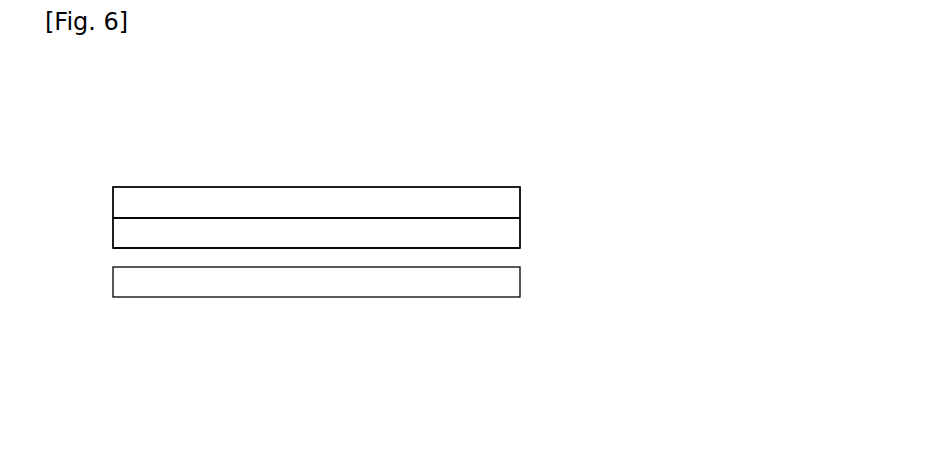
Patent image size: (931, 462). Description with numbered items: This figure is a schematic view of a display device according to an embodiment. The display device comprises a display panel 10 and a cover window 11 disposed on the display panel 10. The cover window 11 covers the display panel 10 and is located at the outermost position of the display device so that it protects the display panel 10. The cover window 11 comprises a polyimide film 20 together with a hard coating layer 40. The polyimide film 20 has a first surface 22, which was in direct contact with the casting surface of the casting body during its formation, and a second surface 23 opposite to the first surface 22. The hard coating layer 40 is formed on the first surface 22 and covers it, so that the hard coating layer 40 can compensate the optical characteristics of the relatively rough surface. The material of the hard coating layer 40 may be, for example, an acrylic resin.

The display panel 10 is at (503, 292).
The cover window 11 is at (105, 188).
The polyimide film 20 is at (500, 239).
The first surface 22 is at (333, 218).
The second surface 23 is at (173, 250).
The hard coating layer 40 is at (264, 202).